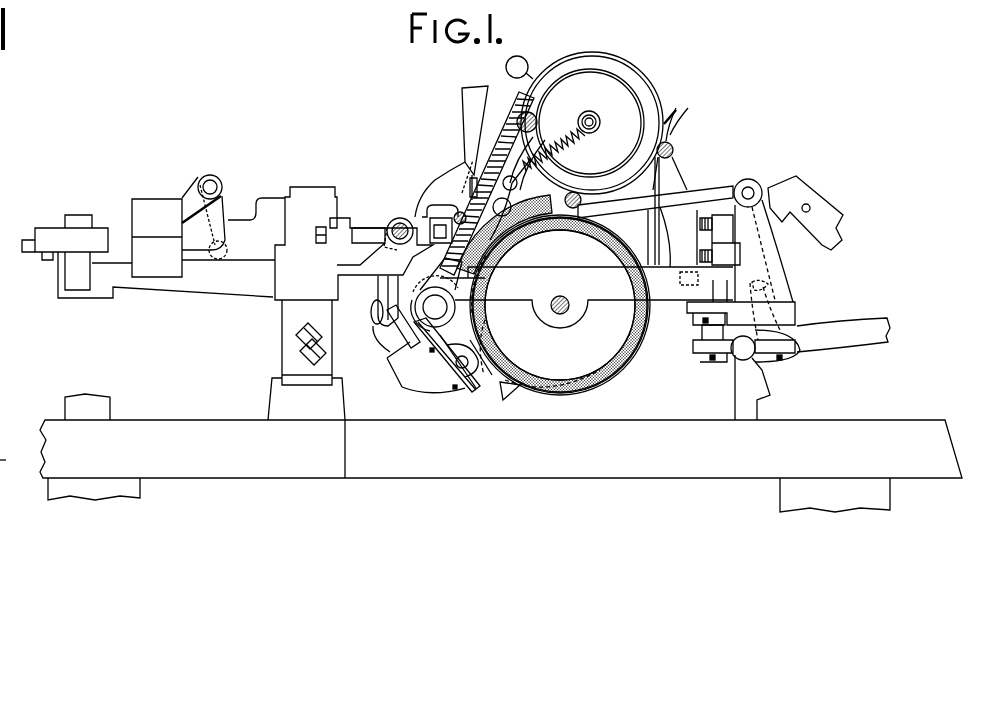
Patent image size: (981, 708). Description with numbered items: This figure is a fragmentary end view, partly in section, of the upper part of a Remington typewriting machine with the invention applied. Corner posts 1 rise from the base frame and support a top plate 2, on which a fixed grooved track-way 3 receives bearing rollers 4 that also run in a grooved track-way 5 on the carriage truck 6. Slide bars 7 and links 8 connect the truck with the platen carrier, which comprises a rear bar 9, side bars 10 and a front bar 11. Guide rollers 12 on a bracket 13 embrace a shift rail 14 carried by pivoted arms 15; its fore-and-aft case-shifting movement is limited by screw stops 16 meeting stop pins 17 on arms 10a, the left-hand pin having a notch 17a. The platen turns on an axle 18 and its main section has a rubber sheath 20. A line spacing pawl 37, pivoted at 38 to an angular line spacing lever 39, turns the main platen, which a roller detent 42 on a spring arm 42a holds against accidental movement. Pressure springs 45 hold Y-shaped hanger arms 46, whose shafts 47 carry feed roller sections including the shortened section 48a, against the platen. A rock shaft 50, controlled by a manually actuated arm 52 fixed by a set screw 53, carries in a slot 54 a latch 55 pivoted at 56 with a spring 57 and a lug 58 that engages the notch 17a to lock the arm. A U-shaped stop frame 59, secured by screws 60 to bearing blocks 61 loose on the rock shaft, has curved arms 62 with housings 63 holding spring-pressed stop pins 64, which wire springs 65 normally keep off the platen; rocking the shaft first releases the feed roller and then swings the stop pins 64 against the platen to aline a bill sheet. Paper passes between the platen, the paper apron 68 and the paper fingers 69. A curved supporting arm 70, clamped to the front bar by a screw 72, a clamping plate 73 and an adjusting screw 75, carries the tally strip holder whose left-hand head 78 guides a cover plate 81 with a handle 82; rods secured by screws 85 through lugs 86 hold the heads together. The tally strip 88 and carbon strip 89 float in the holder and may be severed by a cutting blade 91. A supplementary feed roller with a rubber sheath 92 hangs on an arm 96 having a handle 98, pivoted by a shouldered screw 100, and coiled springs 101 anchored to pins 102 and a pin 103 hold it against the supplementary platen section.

The corner posts 1 is at (78, 488).
The top plate 2 is at (372, 420).
The fixed grooved track-way 3 is at (325, 365).
The bearing rollers 4 is at (322, 336).
The grooved track-way 5 is at (311, 336).
The carriage truck 6 is at (354, 243).
The slide bars 7 is at (363, 205).
The links 8 is at (218, 217).
The rear bar 9 is at (378, 298).
The side bars 10 is at (693, 308).
The extensions or arms 10a is at (392, 226).
The front bar 11 is at (698, 293).
The guide rollers 12 is at (705, 356).
The bracket 13 is at (790, 318).
The shift rail 14 is at (744, 360).
The arms 15 is at (735, 402).
The adjustable screw stops 16 is at (317, 228).
The stop pins 17 is at (388, 215).
The notch or cut-away 17a is at (392, 240).
The shaft or axle 18 is at (563, 298).
The sheath 20 is at (606, 244).
The line spacing pawl 37 is at (710, 197).
The pivot 38 is at (748, 179).
The line spacing lever 39 is at (772, 294).
The roller detent 42 is at (536, 204).
The spring arm 42a is at (488, 257).
The feed roller pressure springs 45 is at (398, 327).
The hanger arm 46 is at (374, 316).
The feed roller shafts 47 is at (490, 345).
The feed roller section 48a is at (482, 322).
The rock shaft 50 is at (433, 309).
The manually actuated arm 52 is at (478, 278).
The set screw 53 is at (420, 295).
The slot 54 is at (470, 135).
The detent or latch 55 is at (449, 186).
The pivot 56 is at (454, 216).
The spring 57 is at (468, 176).
The engaging lug 58 is at (421, 203).
The stop frame or bar 59 is at (422, 365).
The headed screws 60 is at (395, 352).
The bearing blocks 61 is at (460, 350).
The curved arms 62 is at (420, 392).
The housings 63 is at (470, 394).
The stop pins 64 is at (500, 348).
The wire springs 65 is at (408, 387).
The paper apron 68 is at (503, 395).
The paper fingers 69 is at (625, 368).
The supporting arm or bracket 70 is at (670, 211).
The headed screw 72 is at (750, 230).
The clamping plate 73 is at (726, 239).
The adjusting screw 75 is at (700, 232).
The left-hand head 78 is at (590, 123).
The cover plate 81 is at (608, 56).
The handle 82 is at (527, 62).
The screw 85 is at (674, 150).
The lug 86 is at (580, 195).
The tally strip 88 is at (676, 104).
The carbon paper strip 89 is at (688, 108).
The cutting blade 91 is at (682, 124).
The sheath 92 is at (520, 195).
The arm 96 is at (537, 125).
The handle 98 is at (528, 185).
The headed and shouldered screws 100 is at (591, 112).
The coiled springs 101 is at (576, 138).
The pins 102 is at (504, 135).
The pin 103 is at (597, 121).